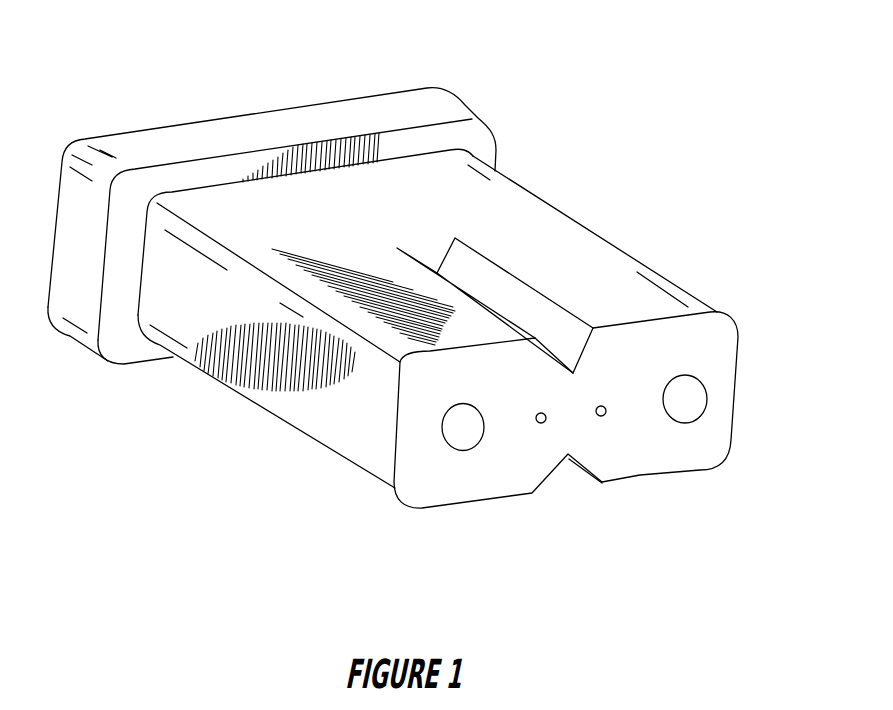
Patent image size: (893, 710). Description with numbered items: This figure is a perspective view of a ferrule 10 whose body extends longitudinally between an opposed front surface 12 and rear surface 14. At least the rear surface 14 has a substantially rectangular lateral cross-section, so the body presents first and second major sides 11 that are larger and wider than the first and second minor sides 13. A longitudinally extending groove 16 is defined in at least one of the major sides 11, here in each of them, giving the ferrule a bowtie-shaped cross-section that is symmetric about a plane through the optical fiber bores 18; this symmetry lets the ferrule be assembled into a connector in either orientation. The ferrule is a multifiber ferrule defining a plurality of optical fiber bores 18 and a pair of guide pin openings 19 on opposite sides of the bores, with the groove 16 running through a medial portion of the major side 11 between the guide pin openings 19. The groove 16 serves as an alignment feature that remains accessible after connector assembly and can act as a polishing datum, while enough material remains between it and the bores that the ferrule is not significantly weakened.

The ferrule 10 is at (615, 207).
The first and second major sides 11 is at (537, 217).
The front surface 12 is at (707, 448).
The first and second minor sides 13 is at (277, 367).
The rear surface 14 is at (392, 92).
The longitudinally extending groove 16 is at (555, 317).
The optical fiber bores 18 is at (539, 424).
The guide pin openings 19 is at (694, 402).